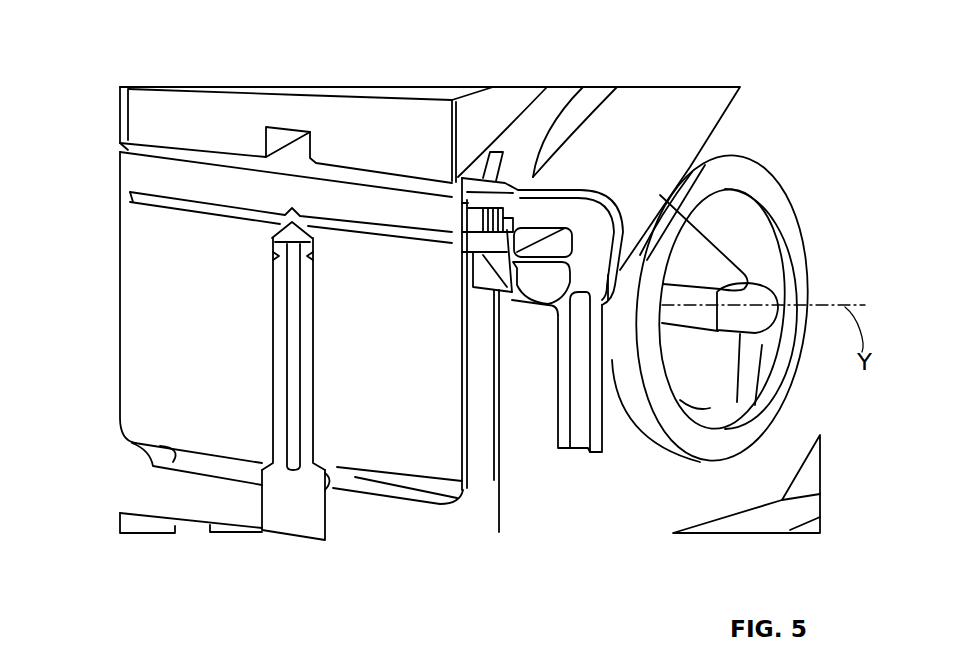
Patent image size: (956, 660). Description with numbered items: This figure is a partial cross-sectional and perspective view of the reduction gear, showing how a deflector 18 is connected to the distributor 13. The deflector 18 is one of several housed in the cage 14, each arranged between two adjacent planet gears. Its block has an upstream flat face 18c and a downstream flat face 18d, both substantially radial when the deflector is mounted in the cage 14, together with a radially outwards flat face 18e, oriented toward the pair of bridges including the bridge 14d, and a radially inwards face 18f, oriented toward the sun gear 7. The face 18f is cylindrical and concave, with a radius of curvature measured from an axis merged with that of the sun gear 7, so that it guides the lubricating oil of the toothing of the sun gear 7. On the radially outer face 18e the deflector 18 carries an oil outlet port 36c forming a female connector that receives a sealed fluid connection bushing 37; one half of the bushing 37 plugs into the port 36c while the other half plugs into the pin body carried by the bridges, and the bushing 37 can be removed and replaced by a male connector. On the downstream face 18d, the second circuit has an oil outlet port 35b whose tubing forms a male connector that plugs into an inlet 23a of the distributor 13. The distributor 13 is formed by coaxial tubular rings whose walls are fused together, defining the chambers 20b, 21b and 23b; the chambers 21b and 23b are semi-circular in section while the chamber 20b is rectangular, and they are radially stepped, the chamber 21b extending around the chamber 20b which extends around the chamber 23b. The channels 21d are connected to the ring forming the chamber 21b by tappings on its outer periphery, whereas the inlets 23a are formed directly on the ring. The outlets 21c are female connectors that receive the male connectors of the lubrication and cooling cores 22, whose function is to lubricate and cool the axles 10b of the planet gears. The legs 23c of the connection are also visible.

The sun gear 7 is at (376, 118).
The axle 10b is at (792, 197).
The distributor 13 is at (738, 80).
The cage 14 is at (403, 517).
The bridge 14d is at (187, 507).
The deflector 18 is at (457, 497).
The upstream flat face 18c is at (120, 338).
The downstream flat face 18d is at (463, 438).
The radially outwards flat face 18e is at (130, 457).
The radially inwards face 18f is at (172, 143).
The chamber 20b is at (572, 234).
The chamber 21b is at (542, 285).
The outlet 21c is at (718, 320).
The channel 21d is at (760, 265).
The lubrication and cooling core 22 is at (698, 383).
The inlet 23a is at (497, 198).
The chamber 23b is at (568, 212).
The clip legs 23c is at (581, 452).
The oil outlet port 35b is at (479, 210).
The oil outlet port 36c is at (273, 423).
The sealed fluid connection bushing 37 is at (298, 515).